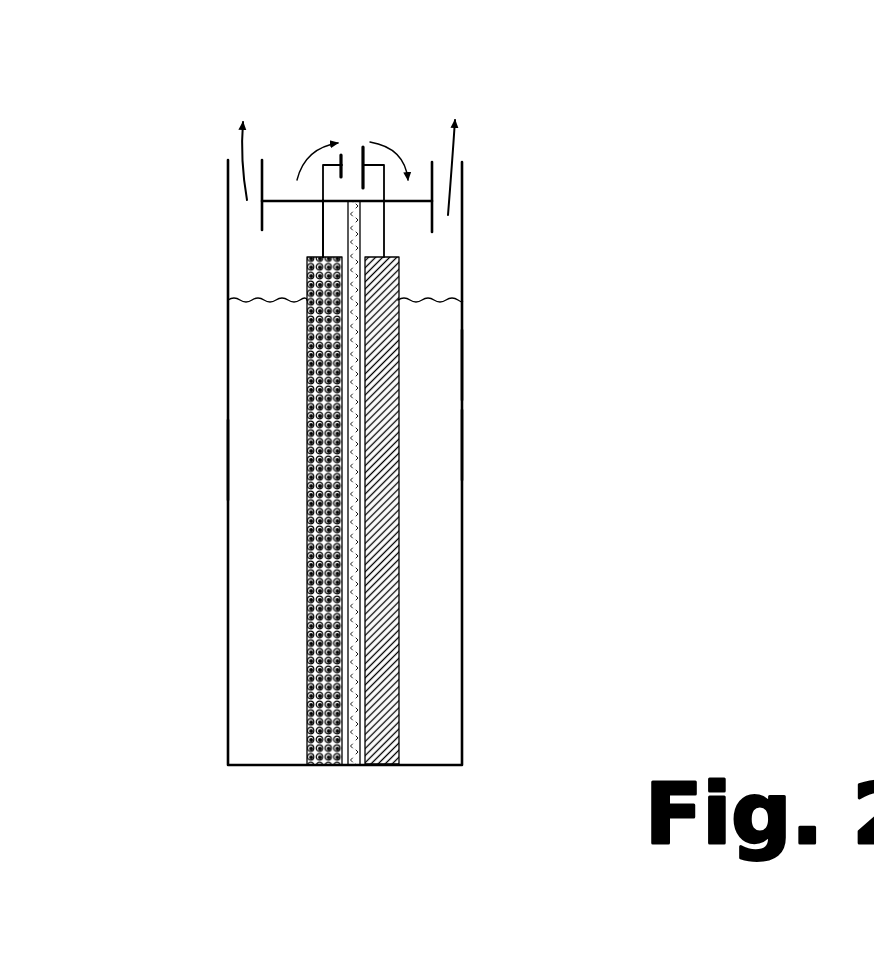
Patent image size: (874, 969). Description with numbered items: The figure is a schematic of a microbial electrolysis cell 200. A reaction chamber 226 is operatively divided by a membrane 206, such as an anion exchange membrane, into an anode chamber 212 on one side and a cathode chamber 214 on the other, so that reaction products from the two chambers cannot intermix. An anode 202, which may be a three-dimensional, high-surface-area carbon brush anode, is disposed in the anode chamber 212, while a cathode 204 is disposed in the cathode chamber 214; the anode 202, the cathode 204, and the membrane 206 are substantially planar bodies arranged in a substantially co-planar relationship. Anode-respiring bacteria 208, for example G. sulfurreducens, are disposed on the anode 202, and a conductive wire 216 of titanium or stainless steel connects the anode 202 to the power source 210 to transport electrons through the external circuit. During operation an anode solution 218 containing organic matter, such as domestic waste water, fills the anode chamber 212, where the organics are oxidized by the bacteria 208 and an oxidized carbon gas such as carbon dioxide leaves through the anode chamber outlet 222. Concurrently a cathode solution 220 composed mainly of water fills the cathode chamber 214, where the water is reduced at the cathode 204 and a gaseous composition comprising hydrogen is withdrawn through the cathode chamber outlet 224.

The electrolysis cell 200 is at (540, 190).
The anode 202 is at (322, 557).
The cathode 204 is at (388, 617).
The membrane 206 is at (352, 745).
The anode-respiring bacteria 208 is at (323, 392).
The power source 210 is at (352, 148).
The anode chamber 212 is at (228, 467).
The cathode chamber 214 is at (462, 447).
The conductive wire 216 is at (322, 237).
The anode solution 218 is at (260, 675).
The cathode solution 220 is at (445, 682).
The anode chamber outlet 222 is at (237, 209).
The cathode chamber outlet 224 is at (458, 188).
The reaction chamber 226 is at (468, 360).